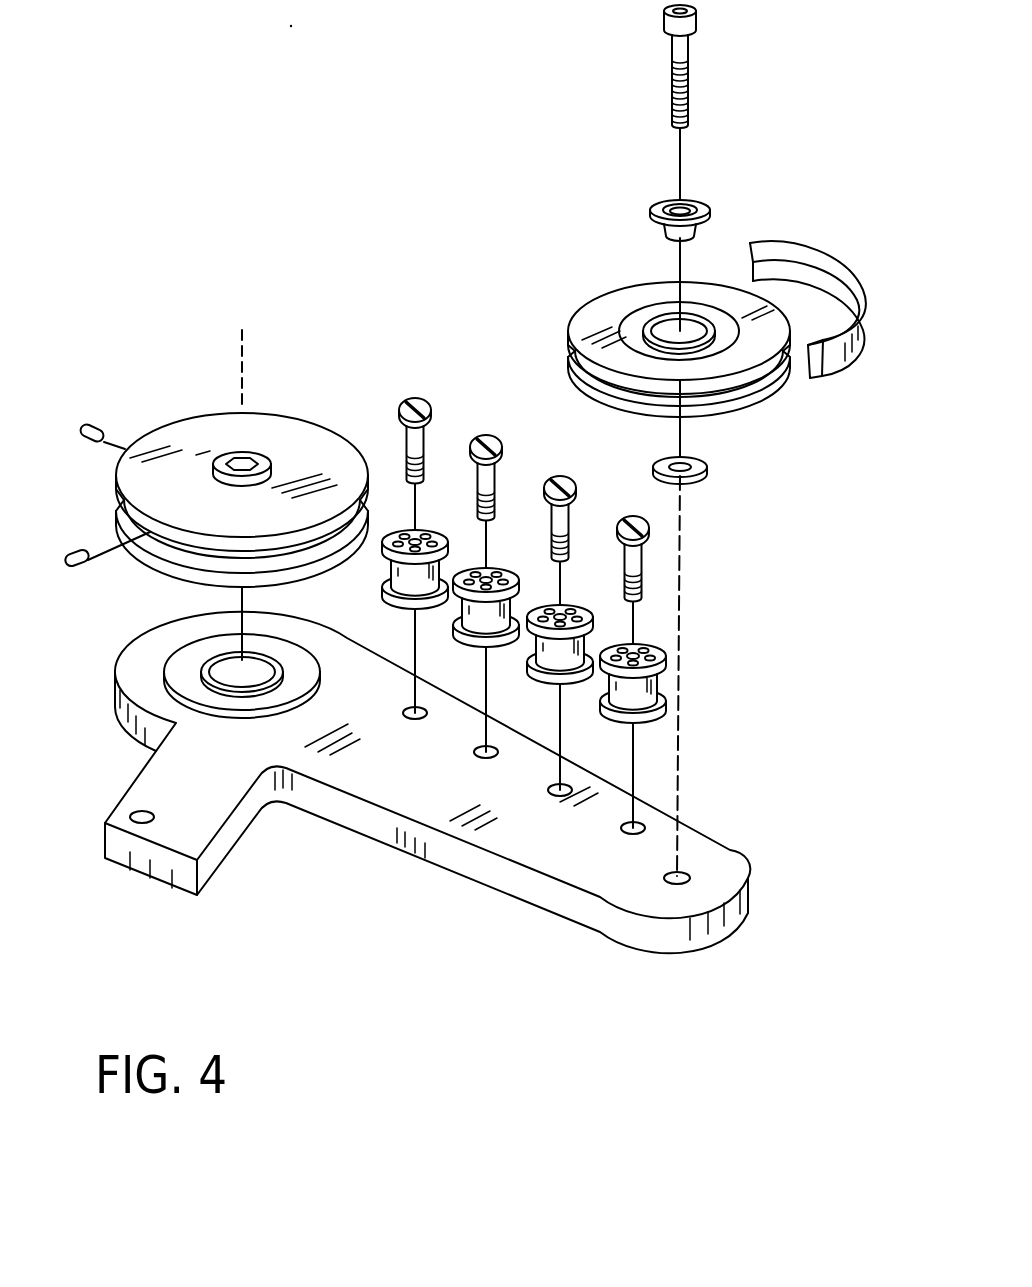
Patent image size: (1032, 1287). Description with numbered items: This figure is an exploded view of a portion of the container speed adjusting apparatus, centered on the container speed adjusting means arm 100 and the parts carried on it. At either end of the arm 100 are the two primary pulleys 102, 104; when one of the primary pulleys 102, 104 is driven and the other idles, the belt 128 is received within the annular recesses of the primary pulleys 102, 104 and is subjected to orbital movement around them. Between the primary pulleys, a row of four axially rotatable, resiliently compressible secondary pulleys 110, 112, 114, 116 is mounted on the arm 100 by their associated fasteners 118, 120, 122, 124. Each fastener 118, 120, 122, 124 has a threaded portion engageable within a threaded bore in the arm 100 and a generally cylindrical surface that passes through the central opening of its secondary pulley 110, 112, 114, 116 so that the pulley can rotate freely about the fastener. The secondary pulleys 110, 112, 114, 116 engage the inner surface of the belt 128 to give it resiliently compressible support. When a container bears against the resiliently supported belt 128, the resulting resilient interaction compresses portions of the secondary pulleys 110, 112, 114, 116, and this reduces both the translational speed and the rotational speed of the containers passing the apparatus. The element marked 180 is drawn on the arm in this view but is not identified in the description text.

The container speed adjusting means arm 100 is at (482, 899).
The primary pulley 102 is at (198, 448).
The primary pulley 104 is at (600, 276).
The secondary pulley 110 is at (397, 602).
The secondary pulley 112 is at (484, 650).
The secondary pulley 114 is at (557, 688).
The secondary pulley 116 is at (630, 725).
The fastener 118 is at (422, 397).
The fastener 120 is at (492, 437).
The fastener 122 is at (566, 478).
The fastener 124 is at (650, 523).
The belt 128 is at (816, 250).
The base plate 180 is at (723, 875).